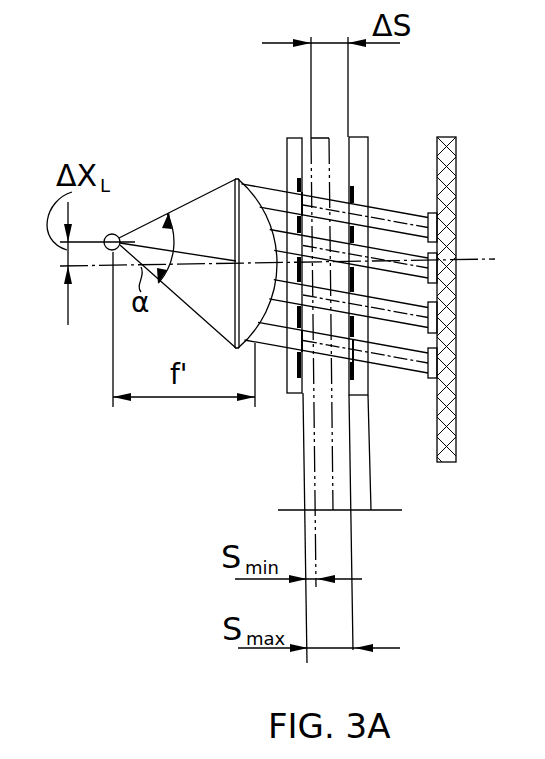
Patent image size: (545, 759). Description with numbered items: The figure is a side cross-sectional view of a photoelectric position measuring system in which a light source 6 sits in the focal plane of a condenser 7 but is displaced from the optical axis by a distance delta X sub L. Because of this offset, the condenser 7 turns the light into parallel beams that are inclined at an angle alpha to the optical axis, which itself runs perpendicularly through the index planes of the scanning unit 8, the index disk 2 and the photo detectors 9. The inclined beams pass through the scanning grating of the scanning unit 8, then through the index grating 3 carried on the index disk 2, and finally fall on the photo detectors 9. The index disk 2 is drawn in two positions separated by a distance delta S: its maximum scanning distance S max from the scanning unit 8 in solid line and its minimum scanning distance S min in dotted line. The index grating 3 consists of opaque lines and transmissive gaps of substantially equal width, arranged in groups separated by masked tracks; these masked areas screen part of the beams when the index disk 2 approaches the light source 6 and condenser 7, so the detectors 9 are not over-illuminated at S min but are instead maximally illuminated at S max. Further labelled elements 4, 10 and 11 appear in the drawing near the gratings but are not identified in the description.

The index disk 2 is at (360, 137).
The index grating 3 is at (318, 138).
The slit of second aperture plate 4 is at (353, 352).
The light source 6 is at (119, 236).
The condenser 7 is at (231, 212).
The scanning unit 8 is at (288, 137).
The photo detectors 9 is at (456, 320).
The slit of first aperture plate 10 is at (330, 190).
The slit of first aperture plate 11 is at (303, 345).